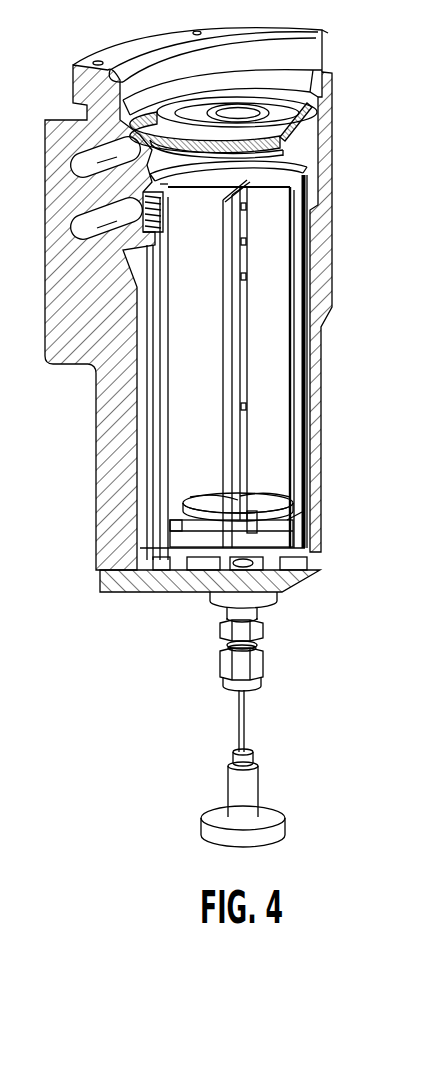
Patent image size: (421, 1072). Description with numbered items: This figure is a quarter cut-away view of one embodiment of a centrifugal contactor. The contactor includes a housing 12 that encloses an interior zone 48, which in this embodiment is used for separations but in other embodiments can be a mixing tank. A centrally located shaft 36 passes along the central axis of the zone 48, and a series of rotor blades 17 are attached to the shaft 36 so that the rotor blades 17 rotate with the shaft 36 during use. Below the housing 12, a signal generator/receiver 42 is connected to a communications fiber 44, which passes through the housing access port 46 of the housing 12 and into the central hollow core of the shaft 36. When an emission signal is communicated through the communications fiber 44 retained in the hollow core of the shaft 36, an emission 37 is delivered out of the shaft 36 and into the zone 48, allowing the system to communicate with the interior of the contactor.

The housing 12 is at (70, 312).
The rotor blades 17 is at (193, 373).
The shaft 36 is at (260, 380).
The emission 37 is at (246, 196).
The signal generator/receiver 42 is at (218, 812).
The communications fiber 44 is at (238, 723).
The housing access port 46 is at (230, 665).
The zone 48 is at (273, 283).